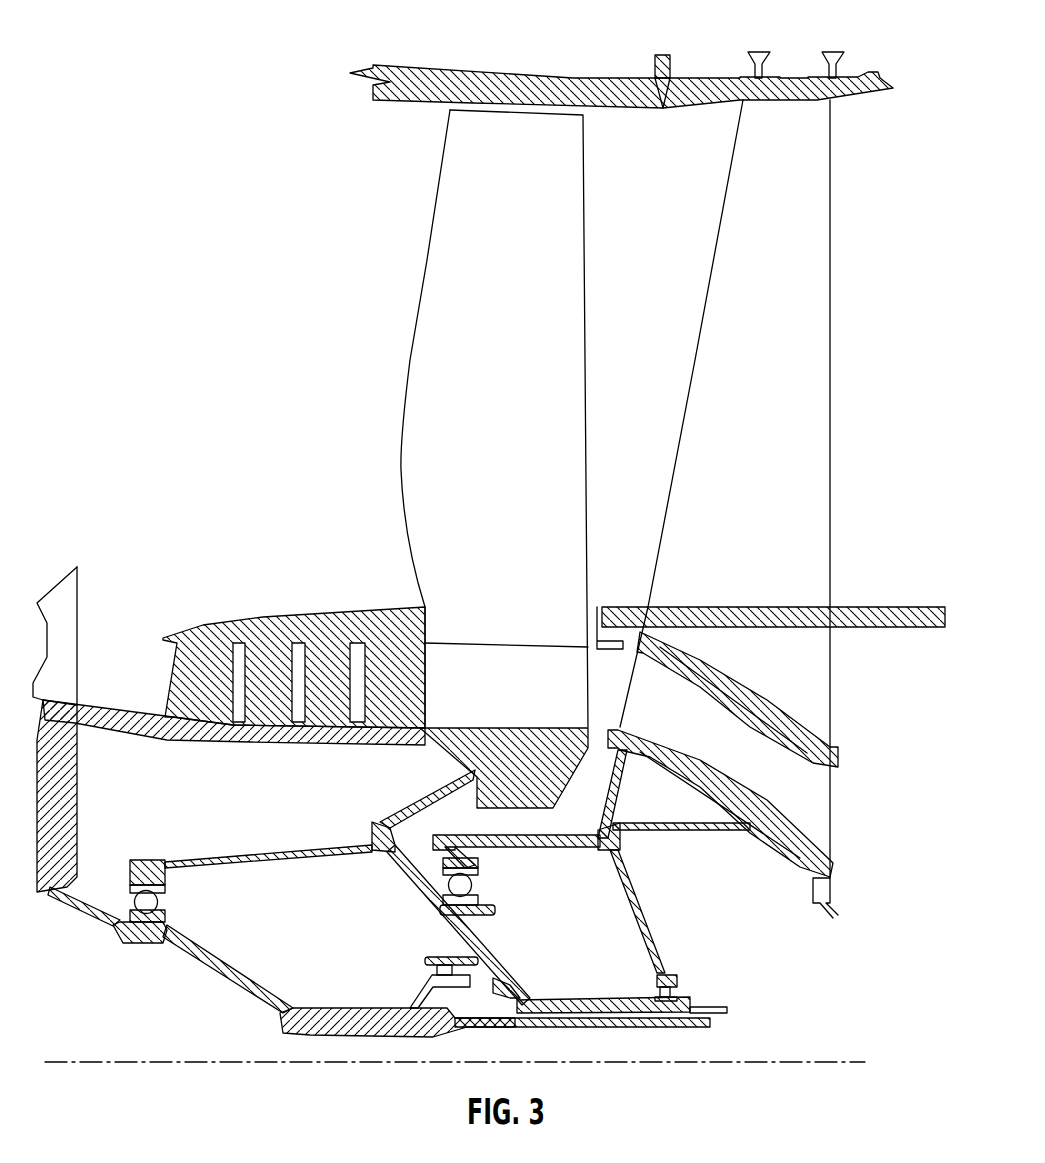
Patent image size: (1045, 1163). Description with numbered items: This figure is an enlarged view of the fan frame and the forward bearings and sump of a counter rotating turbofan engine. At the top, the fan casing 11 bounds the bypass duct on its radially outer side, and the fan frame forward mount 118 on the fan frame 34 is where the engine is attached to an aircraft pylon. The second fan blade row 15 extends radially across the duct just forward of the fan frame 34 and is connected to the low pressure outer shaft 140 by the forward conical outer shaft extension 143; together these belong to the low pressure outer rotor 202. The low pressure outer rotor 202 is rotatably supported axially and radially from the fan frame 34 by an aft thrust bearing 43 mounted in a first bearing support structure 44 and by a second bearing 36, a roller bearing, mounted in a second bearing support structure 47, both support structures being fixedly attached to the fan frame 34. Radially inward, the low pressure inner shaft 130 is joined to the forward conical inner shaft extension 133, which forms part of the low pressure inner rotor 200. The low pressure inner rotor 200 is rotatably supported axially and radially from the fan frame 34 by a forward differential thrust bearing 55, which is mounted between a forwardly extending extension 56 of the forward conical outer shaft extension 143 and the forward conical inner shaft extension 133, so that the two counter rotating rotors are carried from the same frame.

The fan casing 11 is at (578, 78).
The fan frame forward mount 118 is at (776, 70).
The second fan blade row 15 is at (418, 310).
The fan frame 34 is at (832, 668).
The first bearing support structure 44 is at (548, 838).
The second bearing support structure 47 is at (641, 910).
The second bearing 36 is at (673, 985).
The forwardly extending extension 56 is at (268, 850).
The forward differential thrust bearing 55 is at (162, 903).
The forward conical inner shaft extension 133 is at (222, 975).
The forward conical outer shaft extension 143 is at (410, 880).
The aft thrust bearing 43 is at (478, 888).
The low pressure inner rotor 200 is at (345, 1033).
The low pressure inner shaft 130 is at (695, 1028).
The low pressure outer rotor 202 is at (557, 998).
The low pressure outer shaft 140 is at (703, 1007).